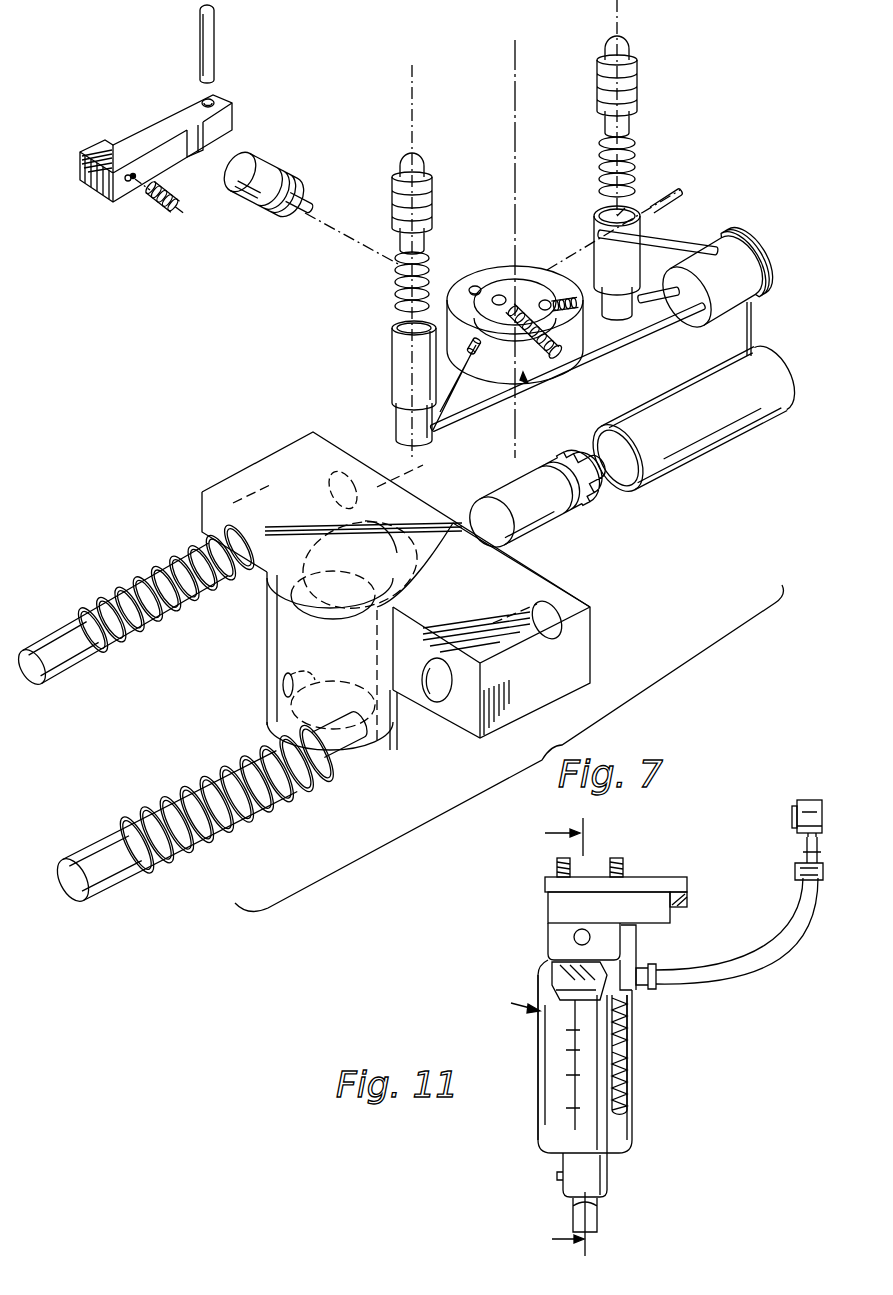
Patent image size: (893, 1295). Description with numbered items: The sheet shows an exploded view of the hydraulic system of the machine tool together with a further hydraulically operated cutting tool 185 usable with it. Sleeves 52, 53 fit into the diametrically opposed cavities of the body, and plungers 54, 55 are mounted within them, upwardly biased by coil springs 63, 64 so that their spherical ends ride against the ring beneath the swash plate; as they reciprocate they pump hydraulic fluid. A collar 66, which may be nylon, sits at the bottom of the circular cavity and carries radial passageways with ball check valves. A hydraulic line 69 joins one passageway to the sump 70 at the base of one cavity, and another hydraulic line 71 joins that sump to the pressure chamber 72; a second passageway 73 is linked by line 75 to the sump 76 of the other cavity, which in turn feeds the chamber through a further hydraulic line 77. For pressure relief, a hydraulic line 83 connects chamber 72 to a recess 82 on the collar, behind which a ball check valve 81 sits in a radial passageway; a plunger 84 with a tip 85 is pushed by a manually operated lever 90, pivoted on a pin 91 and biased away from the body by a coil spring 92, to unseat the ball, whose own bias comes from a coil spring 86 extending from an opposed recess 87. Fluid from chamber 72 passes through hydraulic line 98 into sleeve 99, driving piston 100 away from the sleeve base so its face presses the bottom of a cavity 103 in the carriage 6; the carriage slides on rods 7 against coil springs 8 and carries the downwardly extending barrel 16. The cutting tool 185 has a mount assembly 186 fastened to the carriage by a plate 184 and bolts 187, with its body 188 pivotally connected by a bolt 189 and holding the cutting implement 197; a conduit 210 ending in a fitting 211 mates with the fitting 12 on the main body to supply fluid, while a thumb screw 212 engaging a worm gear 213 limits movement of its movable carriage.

In FIG. 7, the carriage 6 is at (590, 632).
In FIG. 7, the rods 7 is at (83, 667).
In FIG. 7, the coil springs 8 is at (166, 626).
In FIG. 7, the barrel 16 is at (265, 665).
In FIG. 7, the sleeve 52 is at (390, 348).
In FIG. 7, the sleeve 53 is at (645, 228).
In FIG. 7, the plunger 54 is at (433, 195).
In FIG. 7, the plunger 55 is at (640, 82).
In FIG. 7, the coil spring 63 is at (396, 292).
In FIG. 7, the coil spring 64 is at (635, 158).
In FIG. 7, the collar 66 is at (512, 403).
In FIG. 7, the hydraulic line 69 is at (470, 430).
In FIG. 7, the sump 70 is at (395, 424).
In FIG. 7, the hydraulic line 71 is at (560, 385).
In FIG. 7, the pressure chamber 72 is at (730, 330).
In FIG. 7, the radial passageway 73 is at (550, 300).
In FIG. 7, the hydraulic line 75 is at (588, 296).
In FIG. 7, the sump 76 is at (634, 325).
In FIG. 7, the hydraulic line 77 is at (648, 290).
In FIG. 7, the ball check valve 81 is at (505, 295).
In FIG. 7, the recess 82 is at (475, 286).
In FIG. 7, the hydraulic line 83 is at (580, 243).
In FIG. 7, the plunger 84 is at (262, 157).
In FIG. 7, the tip 85 is at (306, 198).
In FIG. 7, the coil spring 86 is at (524, 376).
In FIG. 7, the recess 87 is at (563, 357).
In FIG. 7, the lever 90 is at (172, 113).
In FIG. 7, the pin 91 is at (216, 39).
In FIG. 7, the coil spring 92 is at (175, 216).
In FIG. 7, the hydraulic line 98 is at (752, 327).
In FIG. 7, the sleeve 99 is at (722, 443).
In FIG. 7, the piston 100 is at (560, 530).
In FIG. 7, the cavity 103 is at (460, 580).
In FIG. 11, the fitting 12 is at (551, 1037).
In FIG. 11, the plate 184 is at (690, 887).
In FIG. 11, the cutting tool 185 is at (555, 1061).
In FIG. 11, the mount assembly 186 is at (548, 915).
In FIG. 11, the bolts 187 is at (577, 872).
In FIG. 11, the body 188 is at (540, 1108).
In FIG. 11, the bolt 189 is at (590, 937).
In FIG. 11, the cutting implement 197 is at (600, 1222).
In FIG. 11, the conduit 210 is at (740, 985).
In FIG. 11, the fitting 211 is at (793, 820).
In FIG. 11, the thumb screw 212 is at (630, 1042).
In FIG. 11, the worm gear 213 is at (630, 1086).